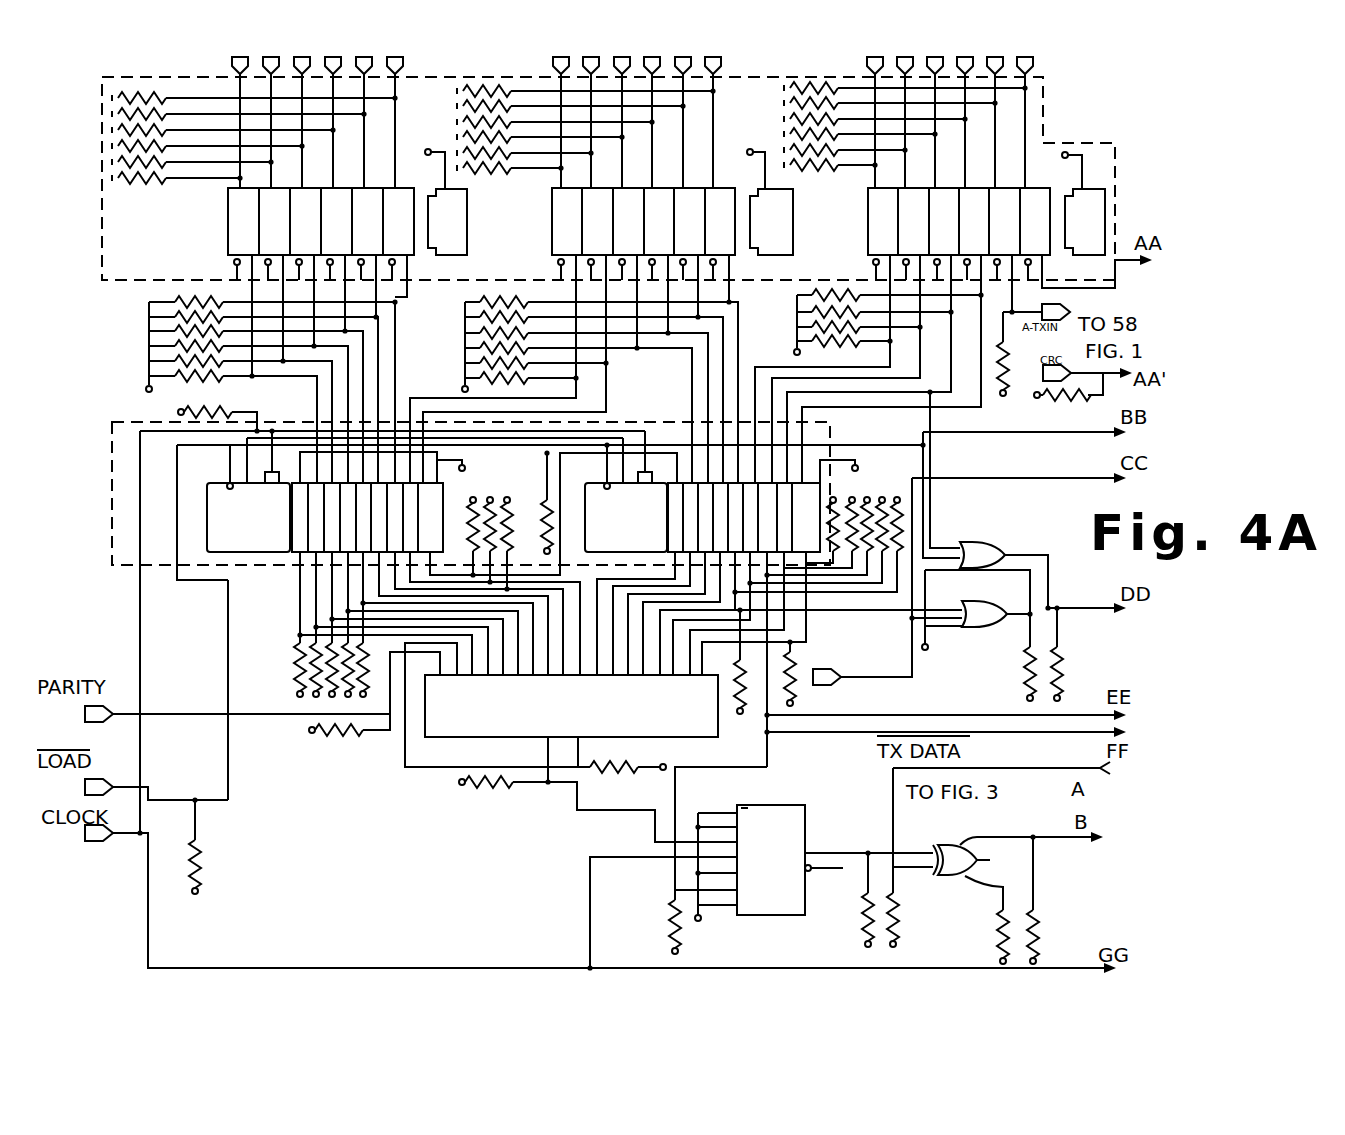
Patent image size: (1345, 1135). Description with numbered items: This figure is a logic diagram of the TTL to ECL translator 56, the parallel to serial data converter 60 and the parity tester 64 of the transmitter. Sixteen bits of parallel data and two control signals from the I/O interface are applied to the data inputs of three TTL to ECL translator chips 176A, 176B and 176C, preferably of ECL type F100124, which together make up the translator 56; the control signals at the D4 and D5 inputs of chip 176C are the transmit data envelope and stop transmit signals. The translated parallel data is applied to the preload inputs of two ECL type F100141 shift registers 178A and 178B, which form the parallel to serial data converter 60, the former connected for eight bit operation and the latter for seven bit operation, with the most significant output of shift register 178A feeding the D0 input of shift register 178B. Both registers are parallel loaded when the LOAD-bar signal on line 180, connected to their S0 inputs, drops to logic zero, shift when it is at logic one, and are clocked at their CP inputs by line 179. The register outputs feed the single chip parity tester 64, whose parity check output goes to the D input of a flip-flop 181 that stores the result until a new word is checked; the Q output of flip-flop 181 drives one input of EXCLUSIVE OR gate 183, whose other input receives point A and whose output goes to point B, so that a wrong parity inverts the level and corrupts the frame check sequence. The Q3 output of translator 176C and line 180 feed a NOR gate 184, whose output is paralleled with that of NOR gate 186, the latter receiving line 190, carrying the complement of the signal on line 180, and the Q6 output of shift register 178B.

The TTL to ECL translator 56 is at (118, 282).
The parallel to serial data converter 60 is at (112, 422).
The parity tester 64 is at (720, 737).
The TTL to ECL translator chip 176A is at (465, 250).
The TTL to ECL translator chip 176B is at (552, 218).
The TTL to ECL translator chip 176C is at (868, 200).
The shift register 178A is at (445, 498).
The shift register 178B is at (822, 495).
The clock line 179 is at (142, 622).
The LOAD line 180 is at (230, 605).
The flip-flop 181 is at (835, 872).
The EXCLUSIVE OR gate 183 is at (1011, 897).
The NOR gate 184 is at (975, 575).
The NOR gate 186 is at (982, 636).
The line 190 is at (875, 679).